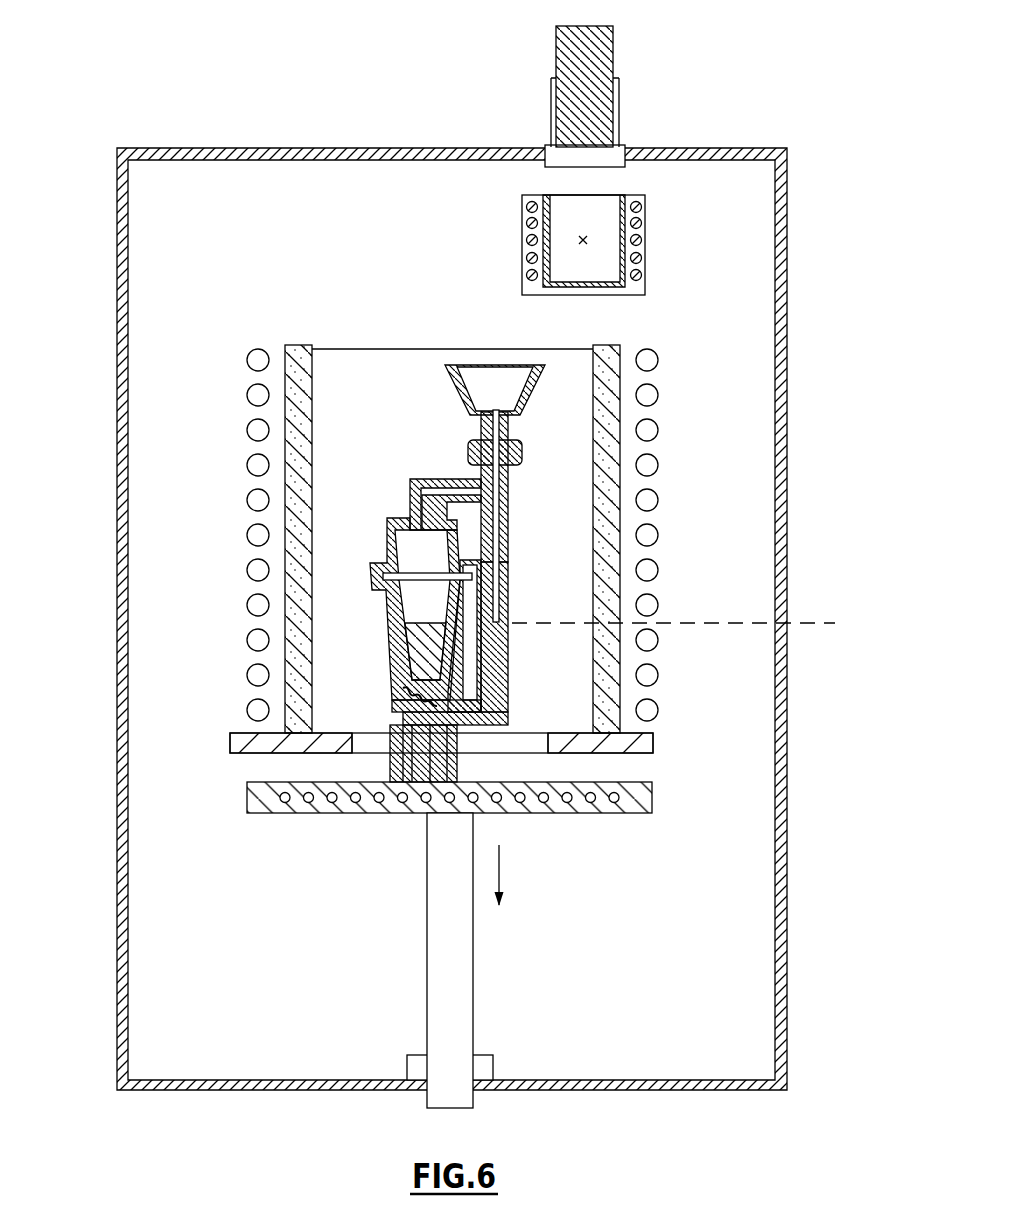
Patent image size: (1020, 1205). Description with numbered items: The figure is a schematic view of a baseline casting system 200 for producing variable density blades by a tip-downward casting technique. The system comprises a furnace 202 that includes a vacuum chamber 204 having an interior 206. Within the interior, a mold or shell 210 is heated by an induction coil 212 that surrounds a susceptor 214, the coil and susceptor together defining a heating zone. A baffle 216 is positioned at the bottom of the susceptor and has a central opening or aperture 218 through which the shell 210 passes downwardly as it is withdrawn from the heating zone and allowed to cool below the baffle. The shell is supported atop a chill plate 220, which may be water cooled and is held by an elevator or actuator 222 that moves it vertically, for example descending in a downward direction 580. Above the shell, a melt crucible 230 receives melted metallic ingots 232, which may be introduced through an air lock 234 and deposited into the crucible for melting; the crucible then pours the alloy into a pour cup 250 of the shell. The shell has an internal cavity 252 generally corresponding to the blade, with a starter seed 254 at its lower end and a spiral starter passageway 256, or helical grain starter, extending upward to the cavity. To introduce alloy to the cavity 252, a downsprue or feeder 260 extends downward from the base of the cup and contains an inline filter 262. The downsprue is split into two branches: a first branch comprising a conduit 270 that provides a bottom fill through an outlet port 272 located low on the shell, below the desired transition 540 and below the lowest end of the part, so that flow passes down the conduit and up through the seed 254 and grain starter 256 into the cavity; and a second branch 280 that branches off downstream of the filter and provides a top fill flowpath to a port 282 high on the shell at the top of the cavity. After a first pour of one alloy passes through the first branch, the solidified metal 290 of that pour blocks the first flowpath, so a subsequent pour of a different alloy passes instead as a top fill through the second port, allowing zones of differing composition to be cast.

The baseline casting system 200 is at (323, 93).
The furnace 202 is at (184, 134).
The vacuum chamber 204 is at (122, 330).
The interior 206 is at (224, 251).
The shell 210 is at (384, 478).
The induction coil 212 is at (645, 363).
The susceptor 214 is at (613, 377).
The baffle 216 is at (640, 746).
The central opening or aperture 218 is at (513, 748).
The chill plate 220 is at (645, 805).
The elevator or actuator 222 is at (414, 916).
The melt crucible 230 is at (655, 242).
The metallic ingots 232 is at (592, 110).
The air lock 234 is at (633, 139).
The pour cup 250 is at (487, 382).
The internal cavity 252 is at (422, 561).
The starter seed 254 is at (411, 784).
The spiral starter passageway 256 is at (397, 697).
The downsprue or feeder 260 is at (495, 482).
The inline filter 262 is at (508, 448).
The conduit 270 is at (493, 604).
The outlet port 272 is at (493, 668).
The second branch 280 is at (462, 497).
The port 282 is at (397, 525).
The metal 290 is at (410, 645).
The transition 540 is at (835, 623).
The downward direction 580 is at (500, 870).